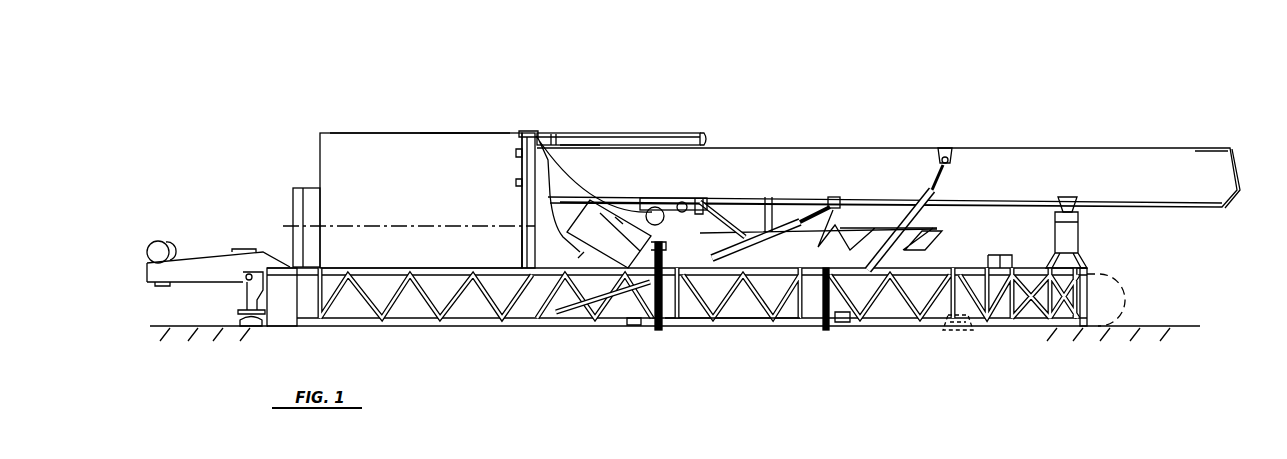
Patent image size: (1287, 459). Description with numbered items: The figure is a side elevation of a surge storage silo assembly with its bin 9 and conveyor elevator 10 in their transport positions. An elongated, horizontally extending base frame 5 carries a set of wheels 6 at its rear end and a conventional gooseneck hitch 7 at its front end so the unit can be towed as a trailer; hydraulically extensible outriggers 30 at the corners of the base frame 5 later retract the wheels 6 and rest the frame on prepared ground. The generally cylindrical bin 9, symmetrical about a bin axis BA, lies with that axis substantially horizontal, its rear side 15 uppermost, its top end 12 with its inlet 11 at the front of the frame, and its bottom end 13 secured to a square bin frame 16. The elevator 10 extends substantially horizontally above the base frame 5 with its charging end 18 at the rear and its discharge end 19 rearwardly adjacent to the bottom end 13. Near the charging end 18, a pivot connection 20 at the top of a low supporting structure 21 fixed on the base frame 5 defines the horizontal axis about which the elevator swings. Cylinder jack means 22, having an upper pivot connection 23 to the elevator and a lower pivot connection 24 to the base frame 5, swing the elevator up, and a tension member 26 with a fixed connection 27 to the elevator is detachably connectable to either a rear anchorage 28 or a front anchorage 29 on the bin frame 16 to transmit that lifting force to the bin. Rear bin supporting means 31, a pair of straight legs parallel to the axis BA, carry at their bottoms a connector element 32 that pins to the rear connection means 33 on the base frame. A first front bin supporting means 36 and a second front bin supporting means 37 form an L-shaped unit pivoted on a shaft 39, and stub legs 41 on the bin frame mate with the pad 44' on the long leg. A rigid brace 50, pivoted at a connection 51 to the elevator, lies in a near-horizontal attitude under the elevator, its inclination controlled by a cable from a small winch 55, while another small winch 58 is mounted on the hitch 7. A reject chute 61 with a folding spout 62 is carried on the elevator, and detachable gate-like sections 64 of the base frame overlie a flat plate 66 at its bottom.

The base frame 5 is at (347, 328).
The wheels 6 is at (1116, 311).
The gooseneck hitch 7 is at (200, 255).
The bin 9 is at (443, 131).
The conveyor elevator 10 is at (872, 147).
The inlet 11 is at (291, 190).
The top end 12 is at (318, 148).
The bottom end 13 is at (532, 207).
The rear side 15 is at (405, 131).
The bin frame 16 is at (530, 248).
The charging end 18 is at (1204, 150).
The discharge end 19 is at (578, 145).
The pivot connection 20 is at (1075, 205).
The supporting structure 21 is at (1080, 230).
The cylinder jack means 22 is at (915, 217).
The upper pivot connection 23 is at (950, 160).
The lower pivot connection 24 is at (846, 326).
The tension member 26 is at (518, 140).
The fixed connection 27 is at (712, 208).
The rear anchorage 28 is at (516, 153).
The front anchorage 29 is at (516, 183).
The outriggers 30 is at (240, 318).
The rear bin supporting means 31 is at (674, 132).
The connector element 32 is at (706, 140).
The rear connection means 33 is at (822, 326).
The first front bin supporting means 36 is at (630, 326).
The second front bin supporting means 37 is at (666, 250).
The shaft 39 is at (652, 328).
The stub legs 41 is at (585, 302).
The plate-like pad 44' is at (678, 273).
The brace 50 is at (720, 258).
The pivot connection 51 is at (840, 205).
The winch 55 is at (690, 198).
The winch 58 is at (158, 241).
The reject chute 61 is at (818, 247).
The spout 62 is at (906, 254).
The gate-like sections 64 is at (740, 328).
The flat plate 66 is at (688, 328).
The bin axis BA is at (292, 226).